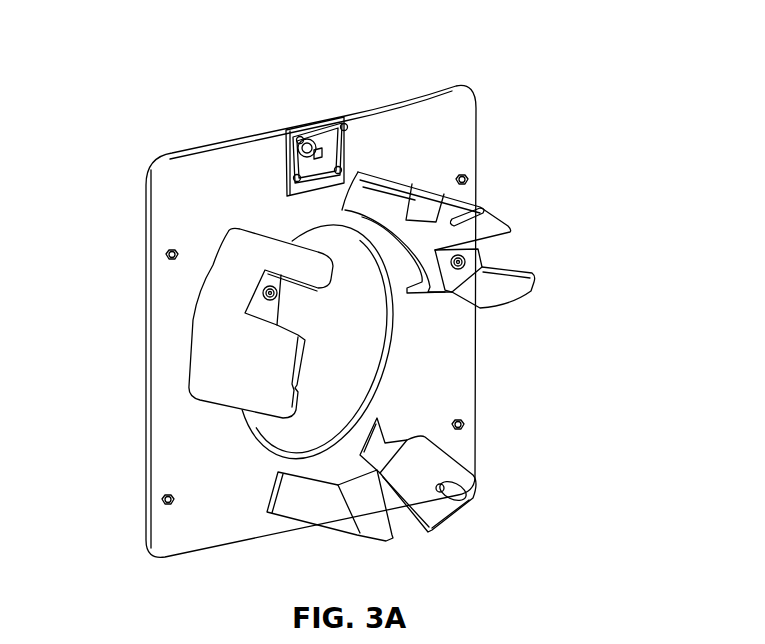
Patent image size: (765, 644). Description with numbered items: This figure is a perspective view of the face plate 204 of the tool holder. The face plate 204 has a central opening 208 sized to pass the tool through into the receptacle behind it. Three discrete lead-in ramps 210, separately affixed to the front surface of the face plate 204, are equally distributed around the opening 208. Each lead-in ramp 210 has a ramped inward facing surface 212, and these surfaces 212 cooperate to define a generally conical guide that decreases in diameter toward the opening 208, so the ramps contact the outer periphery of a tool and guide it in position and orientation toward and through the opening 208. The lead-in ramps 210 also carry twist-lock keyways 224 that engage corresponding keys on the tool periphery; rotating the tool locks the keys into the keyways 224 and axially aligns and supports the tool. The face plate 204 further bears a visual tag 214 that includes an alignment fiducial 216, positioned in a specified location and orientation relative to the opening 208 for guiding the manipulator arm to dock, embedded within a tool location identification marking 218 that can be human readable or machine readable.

The face plate 204 is at (456, 146).
The opening 208 is at (330, 342).
The lead-in ramp 210 is at (217, 338).
The ramped inward facing surface 212 is at (478, 232).
The visual tag 214 is at (349, 153).
The alignment fiducial 216 is at (336, 142).
The tool location identification marking 218 is at (311, 139).
The twist-lock keyway 224 is at (365, 223).